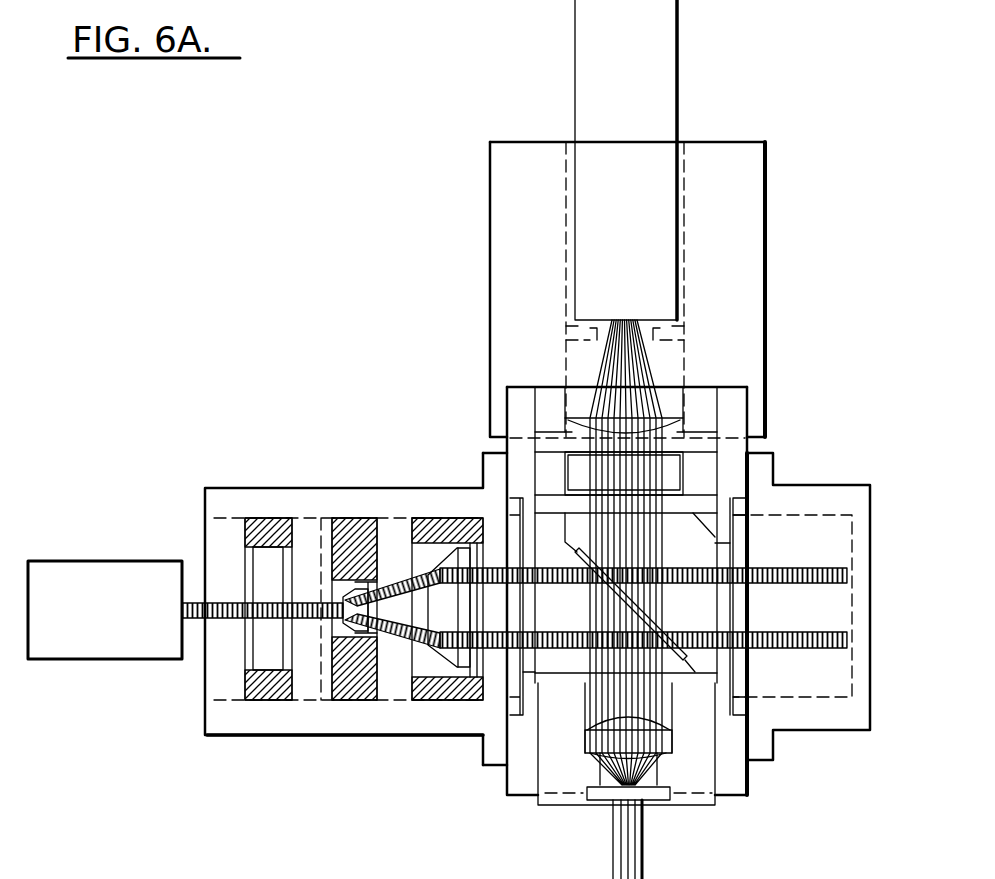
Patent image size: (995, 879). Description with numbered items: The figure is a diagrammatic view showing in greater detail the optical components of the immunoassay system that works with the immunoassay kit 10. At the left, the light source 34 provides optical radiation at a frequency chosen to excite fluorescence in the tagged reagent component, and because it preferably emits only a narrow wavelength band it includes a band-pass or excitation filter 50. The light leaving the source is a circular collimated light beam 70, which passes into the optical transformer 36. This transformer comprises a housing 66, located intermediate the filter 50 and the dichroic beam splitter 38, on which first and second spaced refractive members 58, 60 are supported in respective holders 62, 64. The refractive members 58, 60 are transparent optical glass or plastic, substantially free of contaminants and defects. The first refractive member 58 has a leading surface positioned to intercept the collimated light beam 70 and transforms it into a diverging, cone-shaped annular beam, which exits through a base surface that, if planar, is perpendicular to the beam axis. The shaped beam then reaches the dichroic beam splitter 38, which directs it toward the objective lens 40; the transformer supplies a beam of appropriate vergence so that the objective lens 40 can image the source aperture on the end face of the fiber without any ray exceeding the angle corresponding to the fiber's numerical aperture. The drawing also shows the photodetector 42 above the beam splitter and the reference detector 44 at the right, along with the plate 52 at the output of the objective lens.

The immunoassay kit 10 is at (608, 839).
The light source 34 is at (92, 560).
The optical transformer 36 is at (477, 472).
The dichroic beam splitter 38 is at (653, 618).
The objective lens 40 is at (597, 743).
The photodetector 42 is at (660, 62).
The reference detector 44 is at (833, 500).
The band-pass or excitation filter 50 is at (273, 558).
The output plate 52 is at (697, 805).
The first refractive member 58 is at (348, 640).
The second refractive member 60 is at (443, 618).
The holder 62 is at (343, 687).
The holder 64 is at (462, 685).
The housing 66 is at (235, 715).
The collimated light beam 70 is at (235, 620).